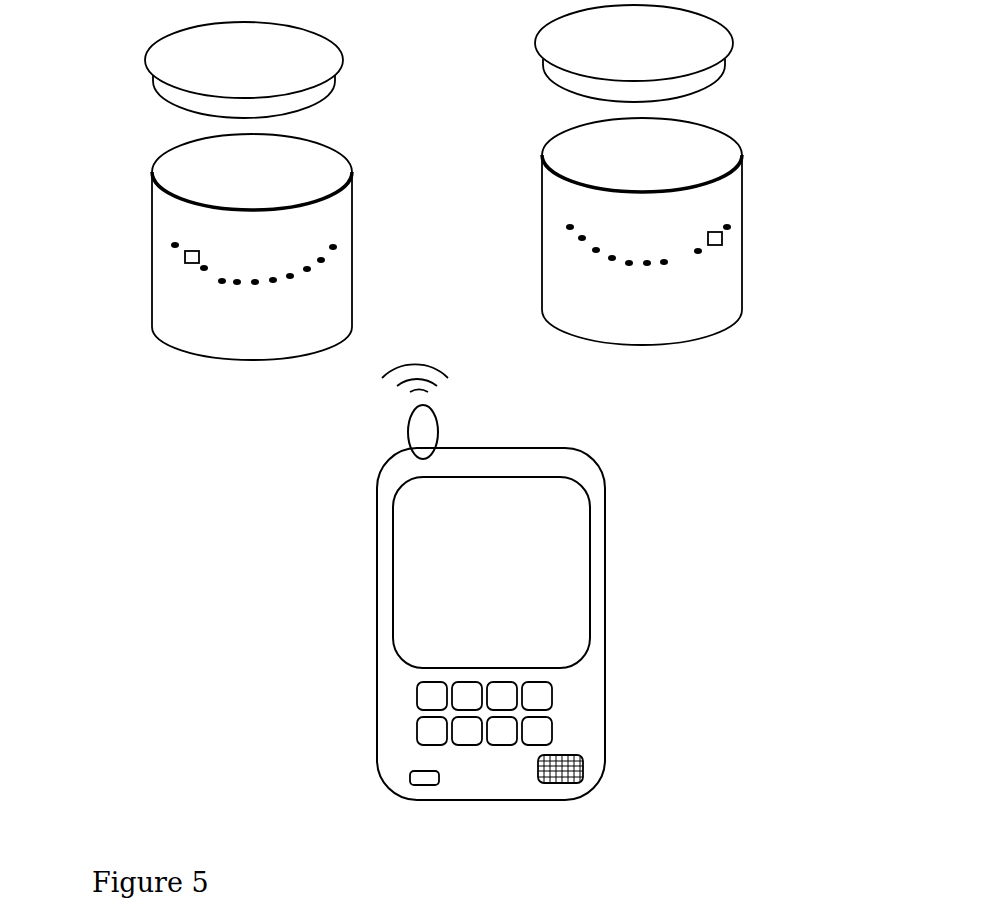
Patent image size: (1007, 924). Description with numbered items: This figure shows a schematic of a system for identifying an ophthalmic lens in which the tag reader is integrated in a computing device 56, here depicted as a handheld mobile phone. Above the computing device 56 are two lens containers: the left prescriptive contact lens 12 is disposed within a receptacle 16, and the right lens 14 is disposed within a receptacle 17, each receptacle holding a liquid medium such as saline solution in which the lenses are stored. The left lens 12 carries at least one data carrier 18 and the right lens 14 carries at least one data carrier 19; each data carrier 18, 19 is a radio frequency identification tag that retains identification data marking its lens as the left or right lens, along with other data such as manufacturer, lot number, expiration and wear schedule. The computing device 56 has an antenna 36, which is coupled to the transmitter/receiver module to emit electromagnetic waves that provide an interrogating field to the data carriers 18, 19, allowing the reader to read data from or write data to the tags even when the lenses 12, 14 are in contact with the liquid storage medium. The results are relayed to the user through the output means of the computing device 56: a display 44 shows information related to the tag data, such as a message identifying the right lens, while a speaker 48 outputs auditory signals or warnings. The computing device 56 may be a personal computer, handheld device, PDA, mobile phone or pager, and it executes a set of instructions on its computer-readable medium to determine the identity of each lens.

The prescriptive contact lens 12 is at (222, 277).
The right lens 14 is at (683, 258).
The receptacle 16 is at (210, 137).
The receptacle 17 is at (708, 128).
The data carrier 18 is at (185, 257).
The data carrier 19 is at (722, 238).
The antenna 36 is at (408, 433).
The display 44 is at (432, 612).
The speaker 48 is at (585, 772).
The computing device 56 is at (605, 622).